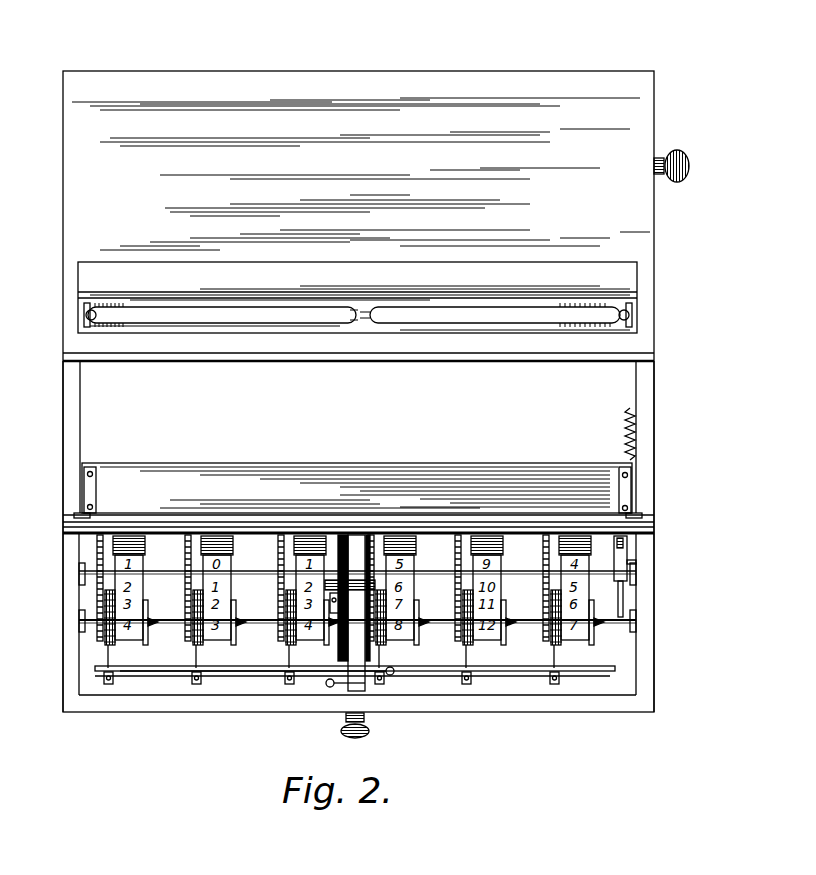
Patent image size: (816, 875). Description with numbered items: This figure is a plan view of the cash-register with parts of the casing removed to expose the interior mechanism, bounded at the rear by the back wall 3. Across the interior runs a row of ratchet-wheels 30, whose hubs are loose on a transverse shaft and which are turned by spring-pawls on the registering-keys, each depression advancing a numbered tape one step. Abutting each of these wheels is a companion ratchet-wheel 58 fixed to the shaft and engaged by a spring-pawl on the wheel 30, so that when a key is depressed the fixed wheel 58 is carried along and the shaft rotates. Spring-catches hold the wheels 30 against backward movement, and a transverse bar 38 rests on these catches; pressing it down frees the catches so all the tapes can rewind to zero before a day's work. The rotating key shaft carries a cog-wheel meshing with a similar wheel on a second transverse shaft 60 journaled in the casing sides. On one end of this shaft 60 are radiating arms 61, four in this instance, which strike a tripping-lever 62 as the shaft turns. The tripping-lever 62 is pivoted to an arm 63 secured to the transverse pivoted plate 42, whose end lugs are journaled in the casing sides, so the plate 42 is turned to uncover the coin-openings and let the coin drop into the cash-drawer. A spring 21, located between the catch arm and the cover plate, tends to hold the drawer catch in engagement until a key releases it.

The back wall 3 is at (357, 536).
The pivoted plate 42 is at (340, 501).
The transverse shaft 60 is at (357, 565).
The ratchet-wheels 58 is at (548, 608).
The ratchet-wheels 30 is at (357, 643).
The spring 21 is at (428, 688).
The transverse bar 38 is at (275, 664).
The radiating arms 61 is at (610, 599).
The tripping-lever 62 is at (630, 562).
The arm 63 is at (620, 538).